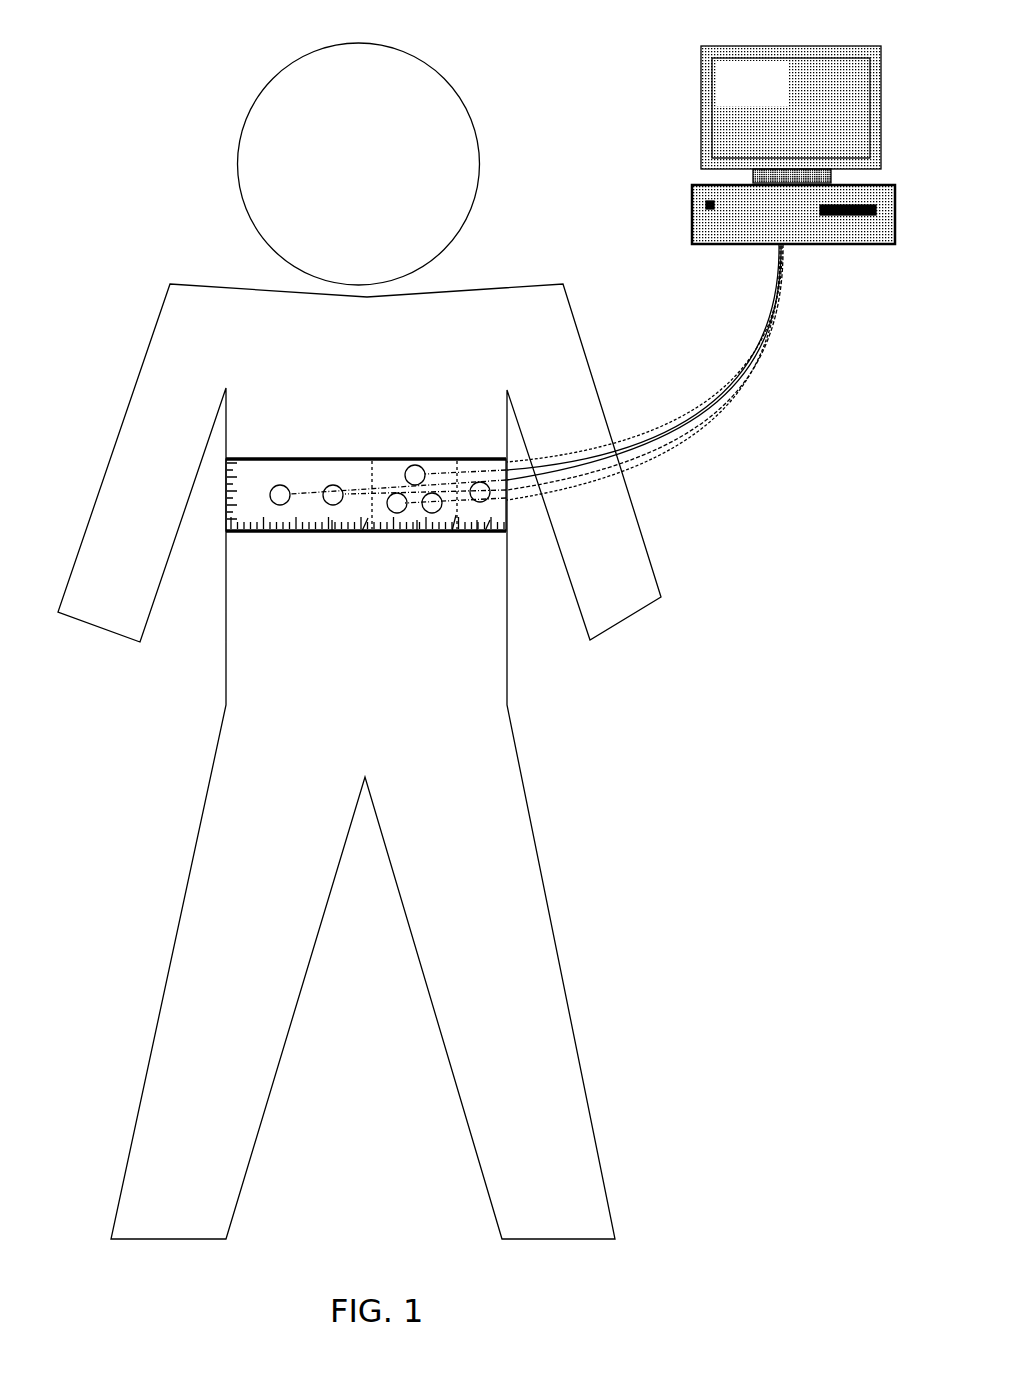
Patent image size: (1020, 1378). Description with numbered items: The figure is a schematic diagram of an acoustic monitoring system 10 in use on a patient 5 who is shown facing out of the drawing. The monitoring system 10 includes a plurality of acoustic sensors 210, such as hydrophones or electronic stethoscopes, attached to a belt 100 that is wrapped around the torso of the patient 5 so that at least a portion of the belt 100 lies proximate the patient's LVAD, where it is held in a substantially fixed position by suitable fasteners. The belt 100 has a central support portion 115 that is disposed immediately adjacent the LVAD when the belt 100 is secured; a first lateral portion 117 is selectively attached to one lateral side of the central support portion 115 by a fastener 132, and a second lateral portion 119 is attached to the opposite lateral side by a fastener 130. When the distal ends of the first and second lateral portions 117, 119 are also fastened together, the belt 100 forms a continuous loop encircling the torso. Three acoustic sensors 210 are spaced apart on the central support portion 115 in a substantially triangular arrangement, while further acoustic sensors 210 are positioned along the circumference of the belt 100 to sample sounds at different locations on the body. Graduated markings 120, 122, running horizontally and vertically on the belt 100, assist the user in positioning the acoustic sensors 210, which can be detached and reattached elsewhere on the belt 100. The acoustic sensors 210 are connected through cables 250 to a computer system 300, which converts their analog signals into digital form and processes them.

The patient 5 is at (153, 318).
The computer system 300 is at (698, 54).
The acoustic monitoring system 10 is at (754, 348).
The cables 250 is at (657, 465).
The belt 100 is at (260, 458).
The graduated markings 122 is at (224, 487).
The first lateral portion 117 is at (332, 533).
The central support portion 115 is at (417, 533).
The fastener 132 is at (362, 533).
The fastener 130 is at (452, 533).
The graduated markings 120 is at (477, 533).
The second lateral portion 119 is at (485, 533).
The acoustic sensors 210 is at (335, 487).